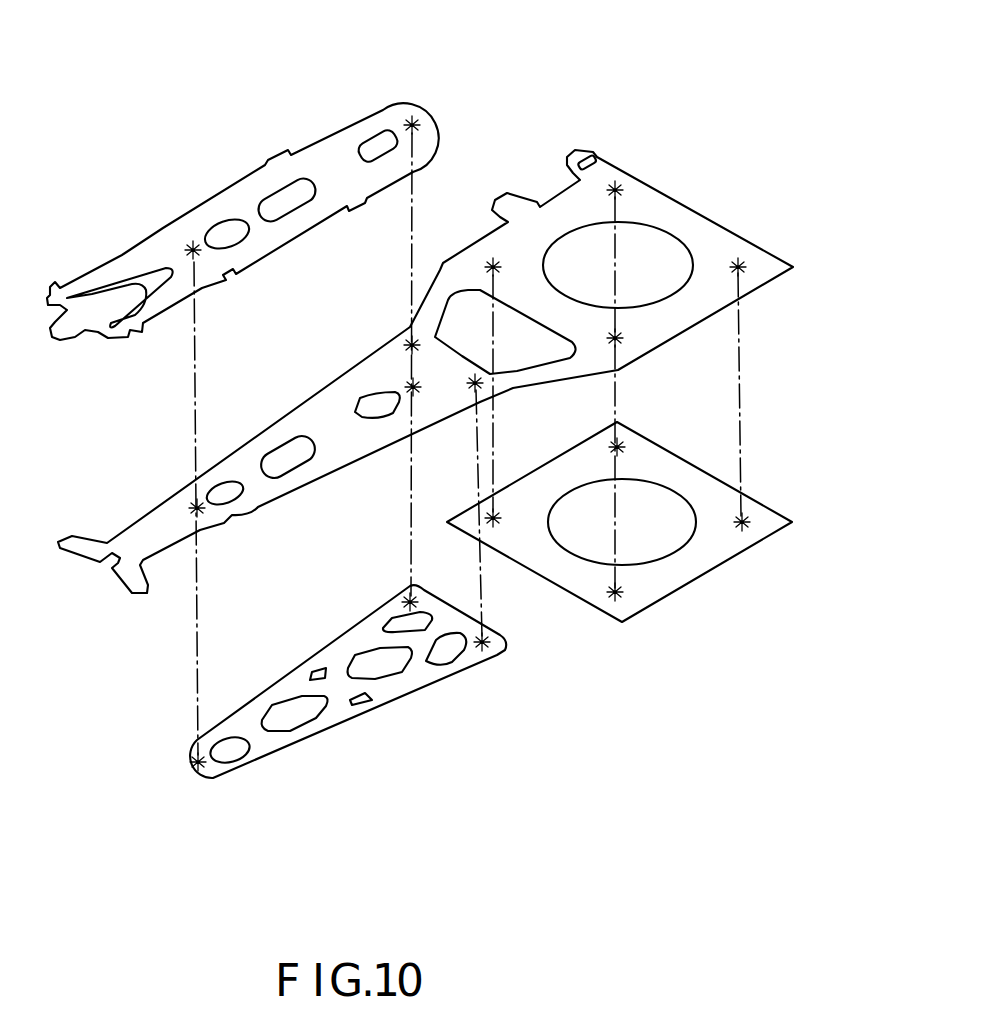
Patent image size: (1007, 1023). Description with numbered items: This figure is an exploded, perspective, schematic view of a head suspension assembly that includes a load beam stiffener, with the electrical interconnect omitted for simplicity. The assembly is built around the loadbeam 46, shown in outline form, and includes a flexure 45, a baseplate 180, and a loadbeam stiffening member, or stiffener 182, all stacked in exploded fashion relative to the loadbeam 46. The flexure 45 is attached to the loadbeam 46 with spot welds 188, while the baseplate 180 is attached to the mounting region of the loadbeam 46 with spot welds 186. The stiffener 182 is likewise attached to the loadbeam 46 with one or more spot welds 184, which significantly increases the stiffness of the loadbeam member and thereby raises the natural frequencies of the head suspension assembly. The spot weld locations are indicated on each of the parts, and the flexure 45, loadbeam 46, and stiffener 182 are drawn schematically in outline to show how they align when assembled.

The flexure 45 is at (443, 120).
The loadbeam 46 is at (670, 193).
The baseplate 180 is at (744, 560).
The stiffener 182 is at (313, 742).
The spot welds 184 is at (505, 633).
The spot welds 186 is at (740, 520).
The spot welds 188 is at (412, 123).